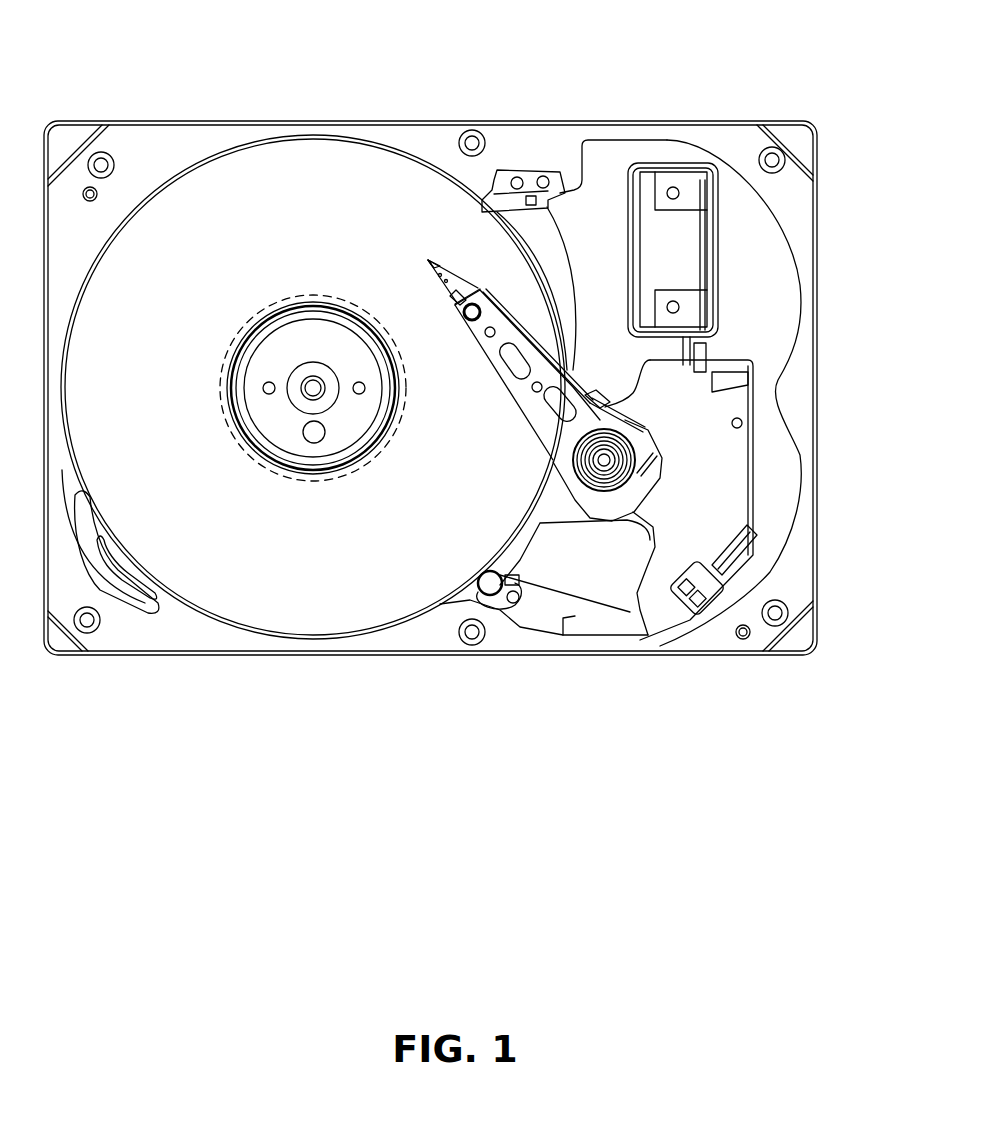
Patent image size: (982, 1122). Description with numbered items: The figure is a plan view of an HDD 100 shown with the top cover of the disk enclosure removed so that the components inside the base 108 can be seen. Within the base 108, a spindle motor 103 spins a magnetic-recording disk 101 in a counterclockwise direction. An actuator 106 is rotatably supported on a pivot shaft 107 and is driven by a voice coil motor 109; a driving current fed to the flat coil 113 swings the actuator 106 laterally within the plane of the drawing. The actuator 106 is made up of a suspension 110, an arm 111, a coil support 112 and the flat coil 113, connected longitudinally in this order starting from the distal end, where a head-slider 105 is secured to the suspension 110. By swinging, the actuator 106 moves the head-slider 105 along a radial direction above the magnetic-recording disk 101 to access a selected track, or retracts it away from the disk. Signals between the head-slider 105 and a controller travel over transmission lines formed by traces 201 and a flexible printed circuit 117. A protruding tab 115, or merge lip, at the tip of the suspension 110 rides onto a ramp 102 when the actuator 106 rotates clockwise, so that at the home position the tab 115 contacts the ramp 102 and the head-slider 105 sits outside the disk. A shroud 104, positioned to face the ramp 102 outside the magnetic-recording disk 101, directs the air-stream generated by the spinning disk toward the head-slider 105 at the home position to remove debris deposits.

The HDD 100 is at (421, 77).
The magnetic-recording disk 101 is at (305, 622).
The ramp 102 is at (493, 201).
The spindle motor 103 is at (262, 468).
The shroud 104 is at (573, 252).
The head-slider 105 is at (435, 262).
The actuator 106 is at (484, 354).
The pivot shaft 107 is at (560, 462).
The base 108 is at (362, 654).
The voice coil motor 109 is at (555, 602).
The suspension 110 is at (448, 300).
The arm 111 is at (520, 406).
The coil support 112 is at (753, 522).
The flat coil 113 is at (640, 590).
The tab 115 is at (430, 261).
The flexible printed circuit 117 is at (650, 362).
The traces 201 is at (581, 378).